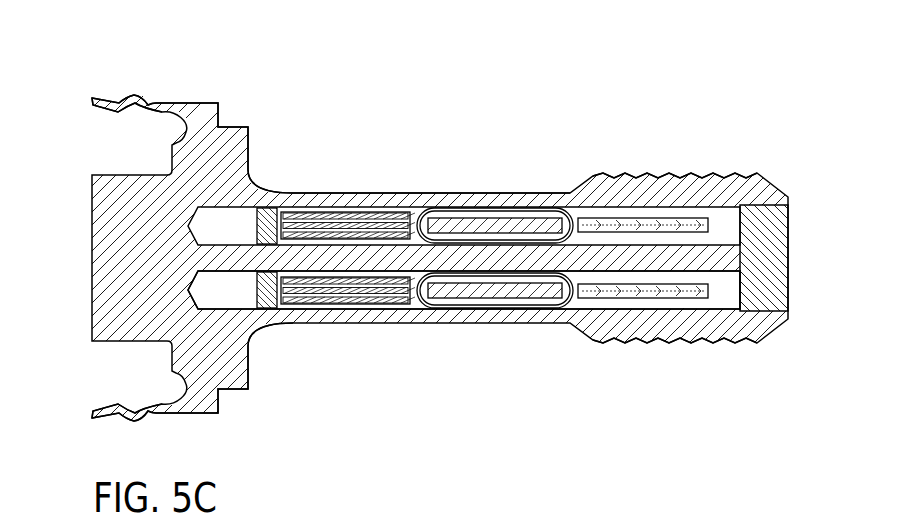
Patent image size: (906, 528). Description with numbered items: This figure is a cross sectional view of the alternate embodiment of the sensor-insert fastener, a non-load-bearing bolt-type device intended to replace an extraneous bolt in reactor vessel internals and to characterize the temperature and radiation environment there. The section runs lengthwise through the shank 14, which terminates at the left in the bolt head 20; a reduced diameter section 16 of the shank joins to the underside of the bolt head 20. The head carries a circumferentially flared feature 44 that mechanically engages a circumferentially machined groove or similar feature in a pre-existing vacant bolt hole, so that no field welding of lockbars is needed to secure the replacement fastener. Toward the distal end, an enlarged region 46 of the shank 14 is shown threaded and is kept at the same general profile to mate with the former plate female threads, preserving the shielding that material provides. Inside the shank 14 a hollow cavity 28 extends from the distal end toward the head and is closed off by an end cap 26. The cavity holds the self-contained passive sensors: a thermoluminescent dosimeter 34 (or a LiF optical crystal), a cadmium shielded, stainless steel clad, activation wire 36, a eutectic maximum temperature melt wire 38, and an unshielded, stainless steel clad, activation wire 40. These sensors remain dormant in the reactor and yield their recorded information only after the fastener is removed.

The shank 14 is at (488, 188).
The reduced diameter section 16 is at (325, 192).
The bolt head 20 is at (218, 127).
The end cap 26 is at (768, 220).
The hollow cavity 28 is at (718, 300).
The thermoluminescent dosimeter 34 is at (266, 213).
The cadmium shielded, stainless steel clad, activation wire 36 is at (340, 292).
The eutectic maximum temperature melt wire 38 is at (478, 290).
The unshielded, stainless steel clad, activation wire 40 is at (633, 295).
The circumferentially flared feature 44 is at (110, 98).
The enlarged region 46 is at (653, 176).